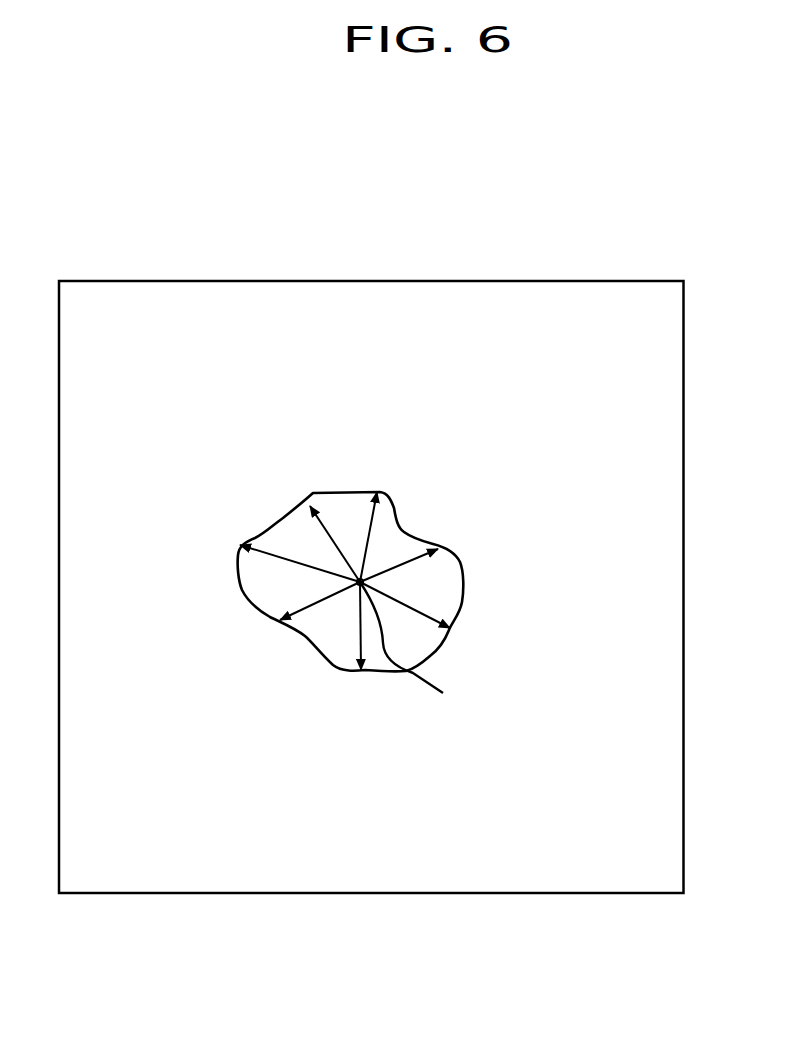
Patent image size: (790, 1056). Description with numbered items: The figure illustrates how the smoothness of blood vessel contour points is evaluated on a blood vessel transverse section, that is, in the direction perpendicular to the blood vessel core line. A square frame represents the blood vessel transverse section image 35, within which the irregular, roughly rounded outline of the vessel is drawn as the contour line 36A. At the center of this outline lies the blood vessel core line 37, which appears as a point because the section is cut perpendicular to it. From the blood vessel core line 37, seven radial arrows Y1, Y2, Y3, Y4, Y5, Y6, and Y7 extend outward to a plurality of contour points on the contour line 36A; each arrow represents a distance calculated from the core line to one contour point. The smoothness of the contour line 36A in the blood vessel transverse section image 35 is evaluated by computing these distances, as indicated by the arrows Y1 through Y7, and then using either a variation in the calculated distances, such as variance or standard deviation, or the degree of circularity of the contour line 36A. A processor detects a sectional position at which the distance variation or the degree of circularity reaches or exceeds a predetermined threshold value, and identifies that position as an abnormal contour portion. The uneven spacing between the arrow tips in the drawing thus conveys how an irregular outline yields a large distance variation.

The blood vessel transverse section image 35 is at (332, 468).
The contour line 36A is at (243, 593).
The blood vessel core line 37 is at (450, 670).
The arrow Y1 is at (372, 527).
The arrow Y2 is at (403, 559).
The arrow Y3 is at (417, 607).
The arrow Y4 is at (337, 663).
The arrow Y5 is at (308, 609).
The arrow Y6 is at (272, 566).
The arrow Y7 is at (323, 526).